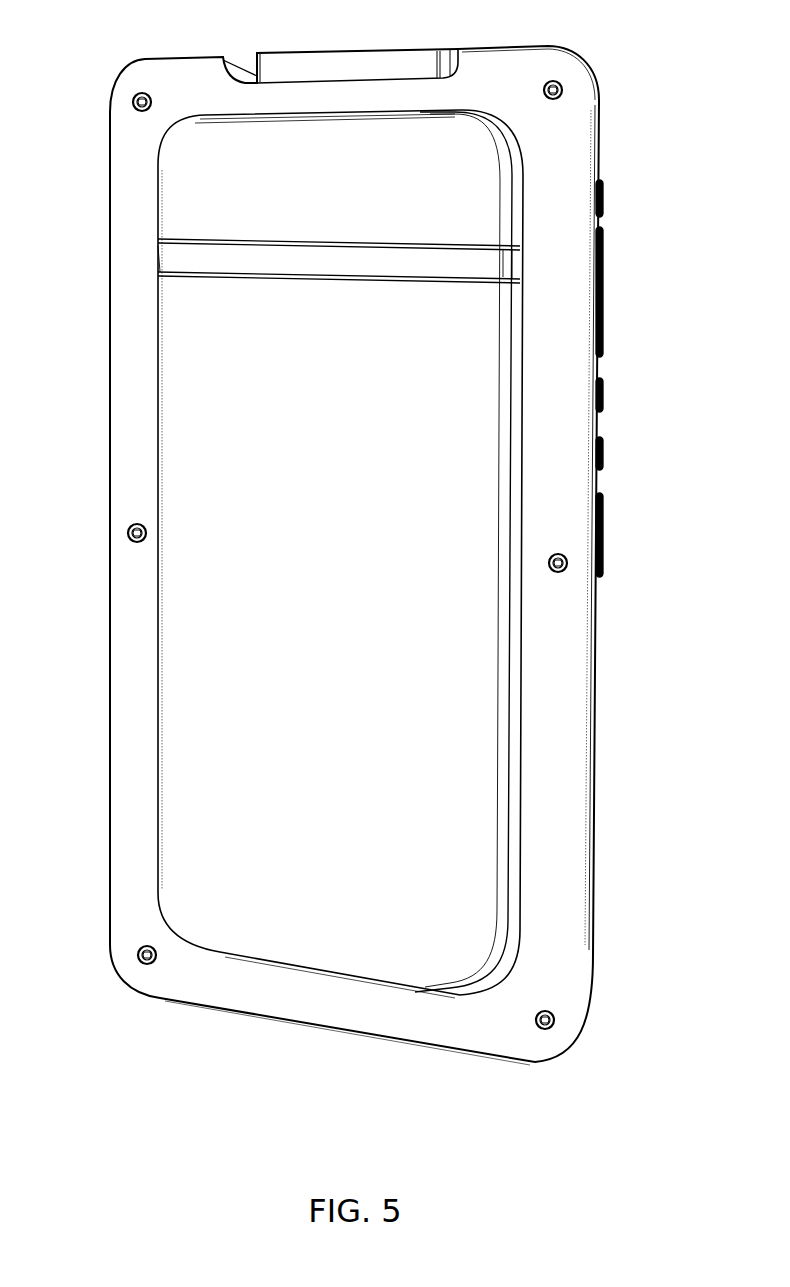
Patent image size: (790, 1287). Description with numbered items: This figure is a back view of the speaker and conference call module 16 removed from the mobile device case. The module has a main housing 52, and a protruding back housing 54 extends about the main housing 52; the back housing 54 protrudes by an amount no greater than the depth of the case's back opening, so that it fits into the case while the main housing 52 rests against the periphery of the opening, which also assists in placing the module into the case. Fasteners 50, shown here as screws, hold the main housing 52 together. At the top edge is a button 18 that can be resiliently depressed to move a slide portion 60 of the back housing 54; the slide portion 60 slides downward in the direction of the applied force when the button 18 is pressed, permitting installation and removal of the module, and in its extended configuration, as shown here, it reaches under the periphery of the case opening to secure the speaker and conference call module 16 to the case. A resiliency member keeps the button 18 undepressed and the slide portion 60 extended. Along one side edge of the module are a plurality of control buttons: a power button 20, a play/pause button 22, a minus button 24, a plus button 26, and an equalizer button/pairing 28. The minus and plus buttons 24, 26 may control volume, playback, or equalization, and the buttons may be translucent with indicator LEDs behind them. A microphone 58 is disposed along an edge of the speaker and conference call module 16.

The speaker and conference call module 16 is at (369, 535).
The button 18 is at (352, 67).
The power button 20 is at (605, 196).
The play/pause button 22 is at (605, 289).
The minus button 24 is at (605, 391).
The plus button 26 is at (605, 450).
The equalizer button/pairing 28 is at (602, 538).
The fasteners 50 is at (565, 92).
The main housing 52 is at (478, 62).
The back housing 54 is at (187, 322).
The microphone 58 is at (219, 1008).
The slide portion 60 is at (352, 150).